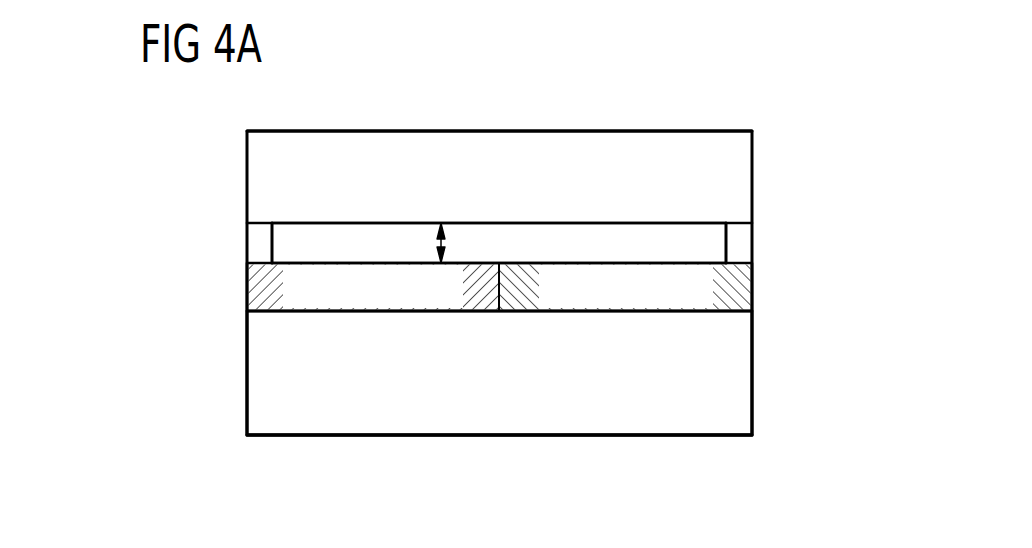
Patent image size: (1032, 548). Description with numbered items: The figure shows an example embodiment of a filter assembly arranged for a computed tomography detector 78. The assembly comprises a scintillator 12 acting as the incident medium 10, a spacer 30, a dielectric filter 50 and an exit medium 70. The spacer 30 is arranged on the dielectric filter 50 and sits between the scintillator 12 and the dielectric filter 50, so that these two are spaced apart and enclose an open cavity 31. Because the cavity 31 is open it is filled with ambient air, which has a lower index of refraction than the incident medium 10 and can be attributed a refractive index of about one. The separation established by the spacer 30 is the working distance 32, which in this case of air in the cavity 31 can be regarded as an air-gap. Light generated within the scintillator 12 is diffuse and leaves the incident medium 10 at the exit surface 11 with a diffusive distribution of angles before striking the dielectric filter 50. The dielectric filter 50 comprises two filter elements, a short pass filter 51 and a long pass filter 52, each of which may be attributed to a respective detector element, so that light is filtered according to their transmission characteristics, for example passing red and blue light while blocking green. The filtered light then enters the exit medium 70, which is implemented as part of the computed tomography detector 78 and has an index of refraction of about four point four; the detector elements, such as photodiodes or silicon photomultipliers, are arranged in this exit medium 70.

The incident medium 10 is at (745, 177).
The exit surface 11 is at (698, 226).
The scintillator 12 is at (495, 140).
The spacer 30 is at (743, 232).
The cavity 31 is at (293, 237).
The working distance 32 is at (435, 243).
The dielectric filter 50 is at (183, 260).
The short pass filter 51 is at (258, 285).
The long pass filter 52 is at (747, 302).
The exit medium 70 is at (257, 373).
The computed tomography detector 78 is at (500, 437).